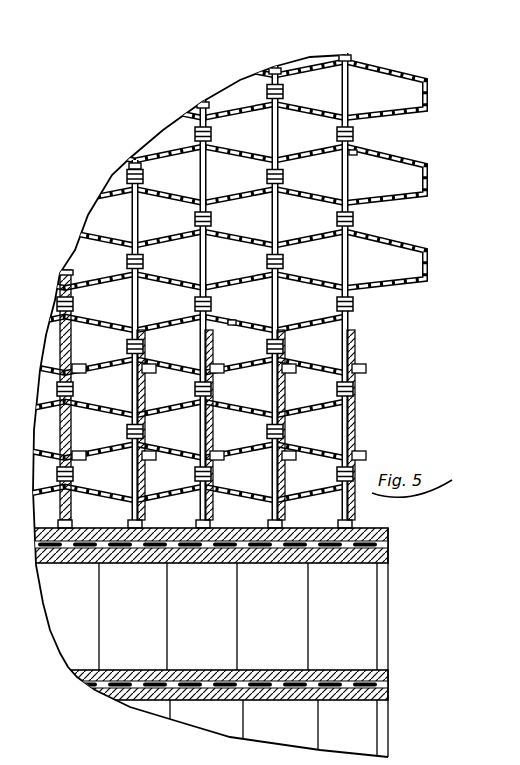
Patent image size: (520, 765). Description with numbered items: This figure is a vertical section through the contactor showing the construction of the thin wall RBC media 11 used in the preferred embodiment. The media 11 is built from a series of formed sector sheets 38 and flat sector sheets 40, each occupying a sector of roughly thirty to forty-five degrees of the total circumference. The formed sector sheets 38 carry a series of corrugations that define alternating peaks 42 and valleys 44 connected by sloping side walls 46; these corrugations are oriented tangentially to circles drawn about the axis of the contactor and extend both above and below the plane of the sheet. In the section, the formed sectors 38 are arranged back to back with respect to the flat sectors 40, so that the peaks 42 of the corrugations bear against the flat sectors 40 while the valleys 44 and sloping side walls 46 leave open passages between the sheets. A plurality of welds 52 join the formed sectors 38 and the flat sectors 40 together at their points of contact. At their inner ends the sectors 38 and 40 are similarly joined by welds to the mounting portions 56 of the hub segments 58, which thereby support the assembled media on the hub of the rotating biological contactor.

The RBC media 11 is at (388, 70).
The formed sector sheet 38 is at (431, 100).
The flat sector sheet 40 is at (274, 66).
The peak 42 is at (433, 183).
The valley 44 is at (357, 149).
The sloping side wall 46 is at (412, 167).
The weld 52 is at (357, 136).
The mounting portion 56 is at (357, 414).
The hub segment 58 is at (392, 532).